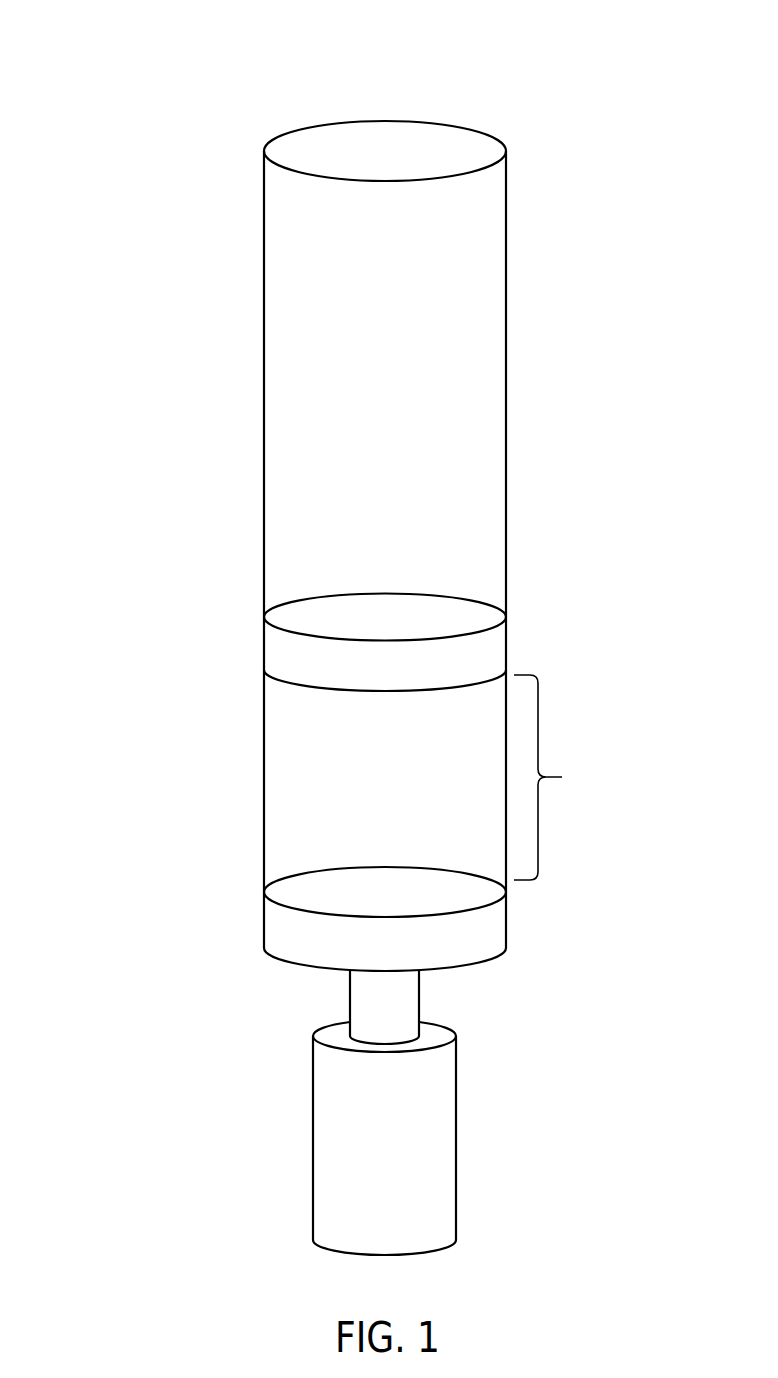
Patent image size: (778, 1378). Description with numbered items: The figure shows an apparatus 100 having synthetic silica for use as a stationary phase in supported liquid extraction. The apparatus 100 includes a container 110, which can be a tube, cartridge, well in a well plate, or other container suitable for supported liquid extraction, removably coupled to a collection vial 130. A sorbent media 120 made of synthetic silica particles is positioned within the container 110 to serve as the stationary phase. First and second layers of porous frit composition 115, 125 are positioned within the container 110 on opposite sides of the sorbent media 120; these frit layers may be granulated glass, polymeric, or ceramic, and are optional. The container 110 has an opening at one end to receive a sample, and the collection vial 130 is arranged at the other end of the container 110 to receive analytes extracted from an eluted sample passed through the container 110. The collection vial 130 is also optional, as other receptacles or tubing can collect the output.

The apparatus 100 is at (101, 69).
The container 110 is at (533, 382).
The first layer of porous frit composition 115 is at (523, 641).
The sorbent media 120 is at (600, 775).
The second layer of porous frit composition 125 is at (533, 919).
The collection vial 130 is at (488, 1141).